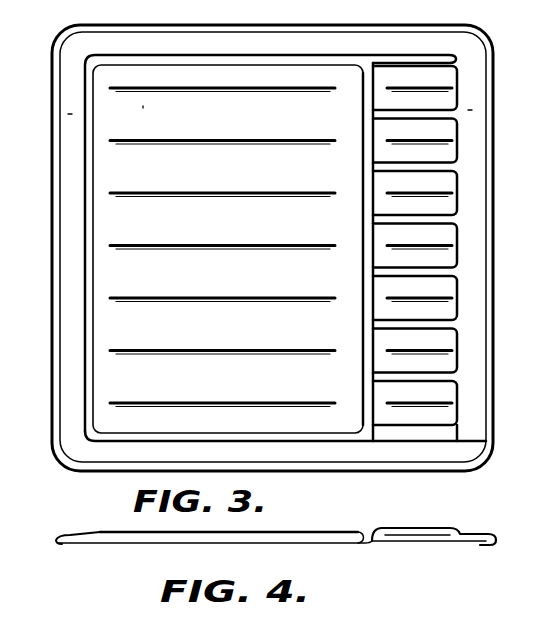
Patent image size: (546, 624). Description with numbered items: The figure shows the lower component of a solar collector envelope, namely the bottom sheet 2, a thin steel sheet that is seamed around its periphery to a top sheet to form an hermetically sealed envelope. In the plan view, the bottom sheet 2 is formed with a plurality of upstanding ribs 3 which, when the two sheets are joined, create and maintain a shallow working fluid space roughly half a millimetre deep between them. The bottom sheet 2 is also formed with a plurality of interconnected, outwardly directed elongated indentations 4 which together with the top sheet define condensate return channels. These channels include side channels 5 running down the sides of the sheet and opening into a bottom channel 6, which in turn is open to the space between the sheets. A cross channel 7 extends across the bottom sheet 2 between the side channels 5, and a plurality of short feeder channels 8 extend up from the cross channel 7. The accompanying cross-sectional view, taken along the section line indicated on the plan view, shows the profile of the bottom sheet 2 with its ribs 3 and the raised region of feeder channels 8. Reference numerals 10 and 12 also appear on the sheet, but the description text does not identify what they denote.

In FIG. 3, the bottom sheet 2 is at (315, 248).
In FIG. 4, the bottom sheet 2 is at (388, 550).
In FIG. 3, the upstanding ribs 3 is at (252, 62).
In FIG. 4, the upstanding ribs 3 is at (417, 528).
In FIG. 3, the outwardly directed elongated indentations 4 is at (52, 113).
In FIG. 3, the side channels 5 is at (140, 15).
In FIG. 3, the bottom channel 6 is at (86, 254).
In FIG. 4, the bottom channel 6 is at (102, 543).
In FIG. 3, the cross channel 7 is at (371, 258).
In FIG. 3, the feeder channels 8 is at (459, 271).
In FIG. 4, the feeder channels 8 is at (445, 530).
In FIG. 3, the cover 10 is at (483, 2).
In FIG. 3, the floor panel 12 is at (420, 0).